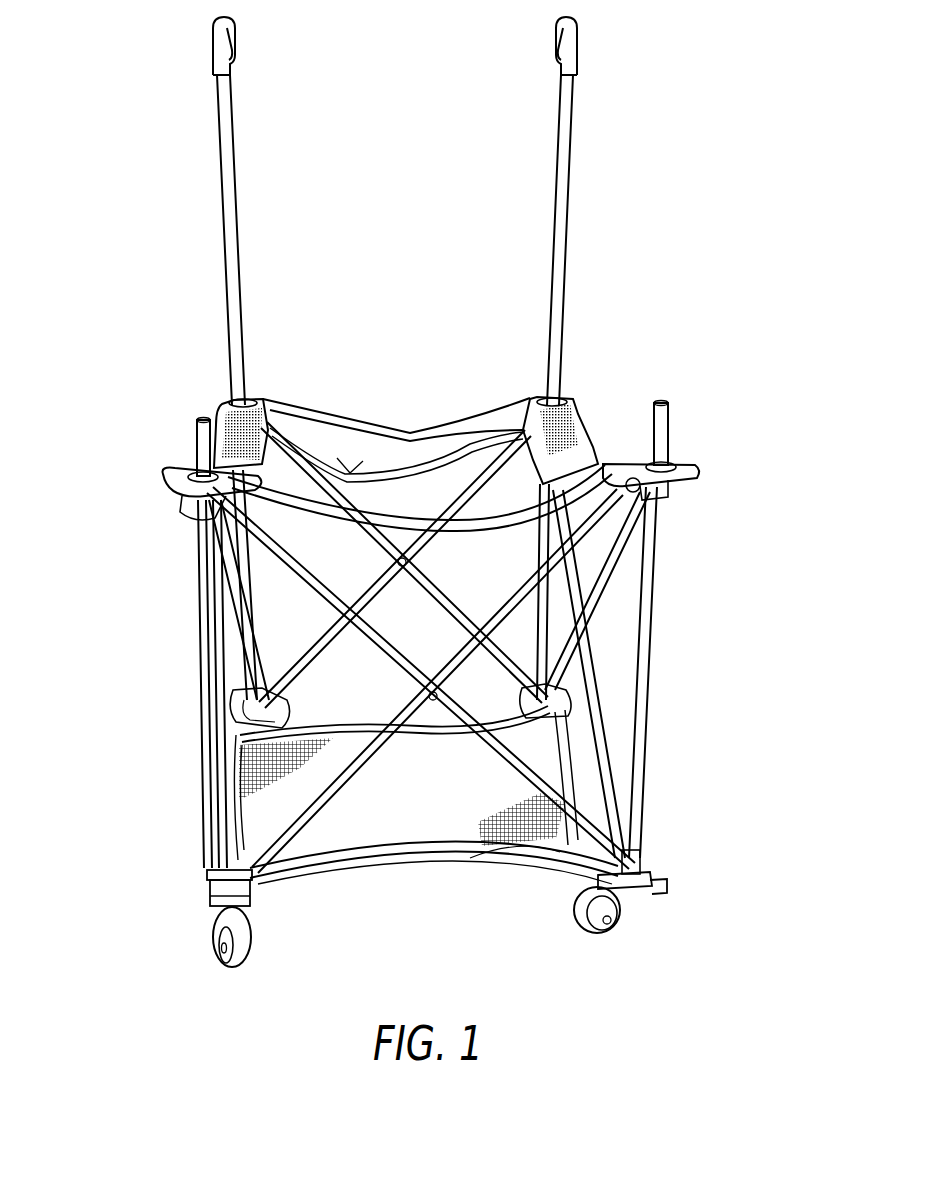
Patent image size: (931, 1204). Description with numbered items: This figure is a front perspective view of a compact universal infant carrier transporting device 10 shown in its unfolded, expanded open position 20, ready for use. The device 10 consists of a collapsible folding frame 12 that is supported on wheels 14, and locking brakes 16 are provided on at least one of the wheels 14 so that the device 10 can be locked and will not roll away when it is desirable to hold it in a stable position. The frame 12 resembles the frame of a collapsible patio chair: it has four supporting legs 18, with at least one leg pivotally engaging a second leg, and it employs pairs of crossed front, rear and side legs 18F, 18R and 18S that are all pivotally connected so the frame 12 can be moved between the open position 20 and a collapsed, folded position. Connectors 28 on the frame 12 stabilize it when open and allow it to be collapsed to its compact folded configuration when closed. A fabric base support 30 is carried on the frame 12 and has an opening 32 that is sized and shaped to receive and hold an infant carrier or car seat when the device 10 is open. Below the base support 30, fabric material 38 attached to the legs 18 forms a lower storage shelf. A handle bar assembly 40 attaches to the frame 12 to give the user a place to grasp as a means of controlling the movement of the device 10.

The compact universal infant carrier transporting device 10 is at (735, 258).
The collapsible folding frame 12 is at (587, 663).
The wheels 14 is at (245, 947).
The locking brakes 16 is at (205, 878).
The supporting legs 18 is at (250, 585).
The crossed front legs 18F is at (455, 660).
The crossed rear legs 18R is at (368, 582).
The crossed side legs 18S is at (225, 543).
The expanded open position 20 is at (625, 390).
The connectors 28 is at (248, 396).
The fabric base support 30 is at (438, 442).
The opening 32 is at (355, 470).
The fabric material 38 is at (395, 813).
The handle bar assembly 40 is at (232, 198).